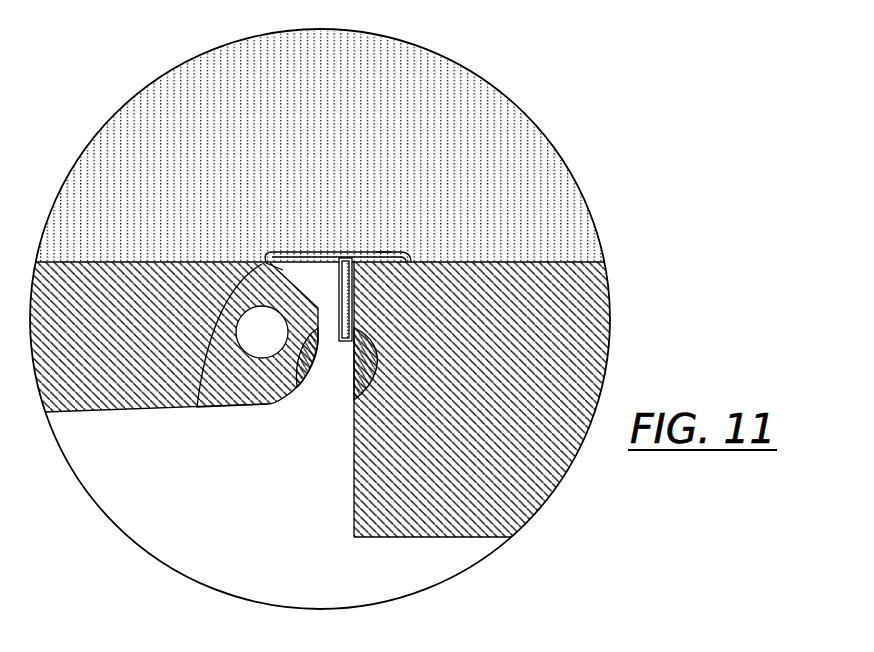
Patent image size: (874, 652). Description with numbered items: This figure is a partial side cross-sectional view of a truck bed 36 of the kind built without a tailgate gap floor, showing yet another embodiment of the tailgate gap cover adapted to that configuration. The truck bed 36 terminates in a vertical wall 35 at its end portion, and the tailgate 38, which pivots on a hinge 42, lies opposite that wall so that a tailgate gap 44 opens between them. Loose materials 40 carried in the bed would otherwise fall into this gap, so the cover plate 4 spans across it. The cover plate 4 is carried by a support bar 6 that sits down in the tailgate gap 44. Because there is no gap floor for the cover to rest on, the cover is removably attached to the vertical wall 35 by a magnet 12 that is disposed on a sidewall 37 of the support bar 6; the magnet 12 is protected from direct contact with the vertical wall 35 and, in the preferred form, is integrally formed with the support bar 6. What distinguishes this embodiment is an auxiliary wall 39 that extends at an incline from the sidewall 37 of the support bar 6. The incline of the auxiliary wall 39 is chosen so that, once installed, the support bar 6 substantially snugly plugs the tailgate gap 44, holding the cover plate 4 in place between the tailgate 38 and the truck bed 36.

The cover plate 4 is at (377, 251).
The support bar 6 is at (333, 265).
The magnet 12 is at (350, 341).
The vertical wall of end portion of truck bed 35 is at (354, 516).
The truck bed 36 is at (475, 261).
The sidewall of support bar 37 is at (355, 383).
The tailgate 38 is at (117, 413).
The auxiliary wall of support bar 39 is at (268, 260).
The loose materials (debris) 40 is at (485, 82).
The hinge 42 is at (221, 356).
The tailgate gap 44 is at (240, 352).